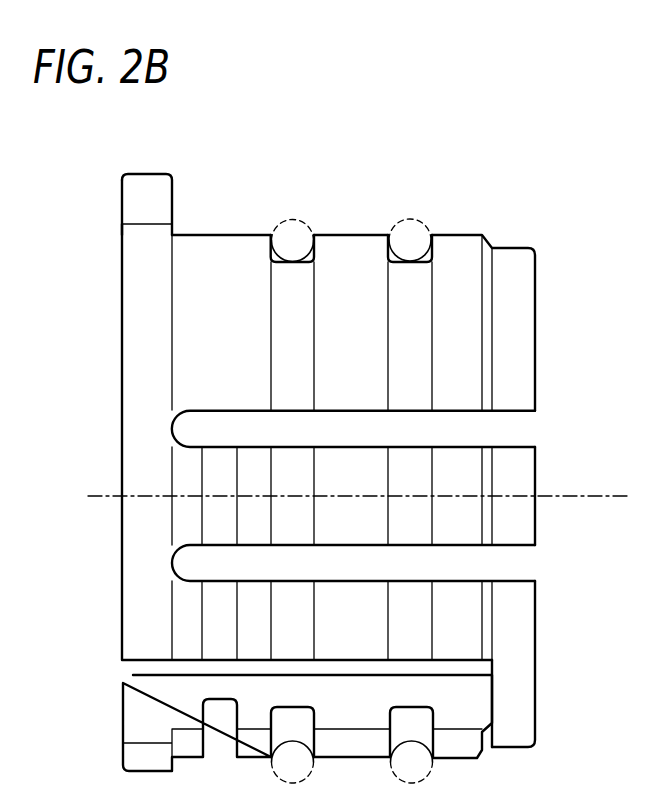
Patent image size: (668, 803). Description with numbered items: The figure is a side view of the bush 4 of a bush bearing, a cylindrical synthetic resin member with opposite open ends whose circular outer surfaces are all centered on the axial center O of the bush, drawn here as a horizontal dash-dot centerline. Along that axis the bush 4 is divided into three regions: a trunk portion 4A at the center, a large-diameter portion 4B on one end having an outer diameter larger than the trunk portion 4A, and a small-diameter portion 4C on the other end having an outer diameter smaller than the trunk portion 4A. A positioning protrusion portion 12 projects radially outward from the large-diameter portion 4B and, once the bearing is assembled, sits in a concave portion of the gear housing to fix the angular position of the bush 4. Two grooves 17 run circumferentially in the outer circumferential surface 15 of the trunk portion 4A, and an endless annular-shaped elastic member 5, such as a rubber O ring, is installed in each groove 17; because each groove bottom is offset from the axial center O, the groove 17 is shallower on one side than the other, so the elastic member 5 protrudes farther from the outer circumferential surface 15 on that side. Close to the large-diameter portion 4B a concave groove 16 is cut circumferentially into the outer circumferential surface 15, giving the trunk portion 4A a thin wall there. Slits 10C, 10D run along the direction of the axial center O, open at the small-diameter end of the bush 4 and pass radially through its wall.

The bush 4 is at (335, 442).
The trunk portion 4A is at (352, 248).
The large-diameter portion 4B is at (144, 224).
The small-diameter portion 4C is at (512, 247).
The endless annular-shaped elastic member 5 is at (296, 212).
The slit 10C is at (510, 413).
The slit 10D is at (510, 548).
The positioning protrusion portion 12 is at (147, 174).
The outer circumferential surface 15 is at (212, 247).
The concave groove 16 is at (203, 745).
The groove 17 is at (283, 226).
The axial center of the bush O is at (582, 496).